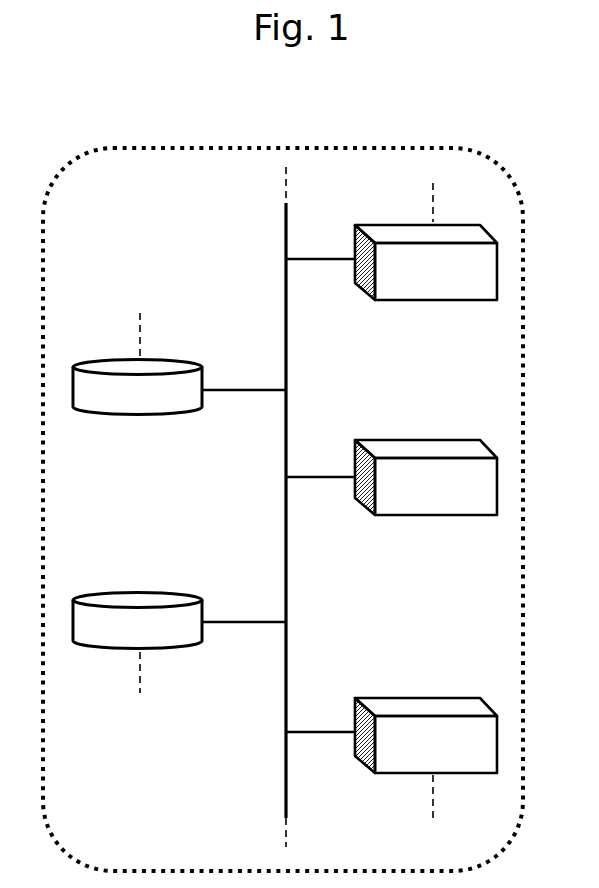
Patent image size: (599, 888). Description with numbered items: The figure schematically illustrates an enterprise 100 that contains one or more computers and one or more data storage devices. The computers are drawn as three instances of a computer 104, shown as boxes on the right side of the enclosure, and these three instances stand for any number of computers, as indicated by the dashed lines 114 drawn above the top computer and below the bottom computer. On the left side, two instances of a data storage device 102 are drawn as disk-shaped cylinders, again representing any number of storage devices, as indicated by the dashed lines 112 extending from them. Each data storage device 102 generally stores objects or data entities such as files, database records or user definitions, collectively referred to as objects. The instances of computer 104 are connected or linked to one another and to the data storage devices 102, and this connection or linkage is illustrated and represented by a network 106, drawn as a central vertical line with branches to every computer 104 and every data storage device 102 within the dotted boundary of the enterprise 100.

The enterprise 100 is at (353, 135).
The data storage device 102 is at (167, 413).
The computer 104 is at (460, 300).
The network 106 is at (230, 389).
The dashed lines 112 is at (145, 337).
The dashed lines 114 is at (432, 215).